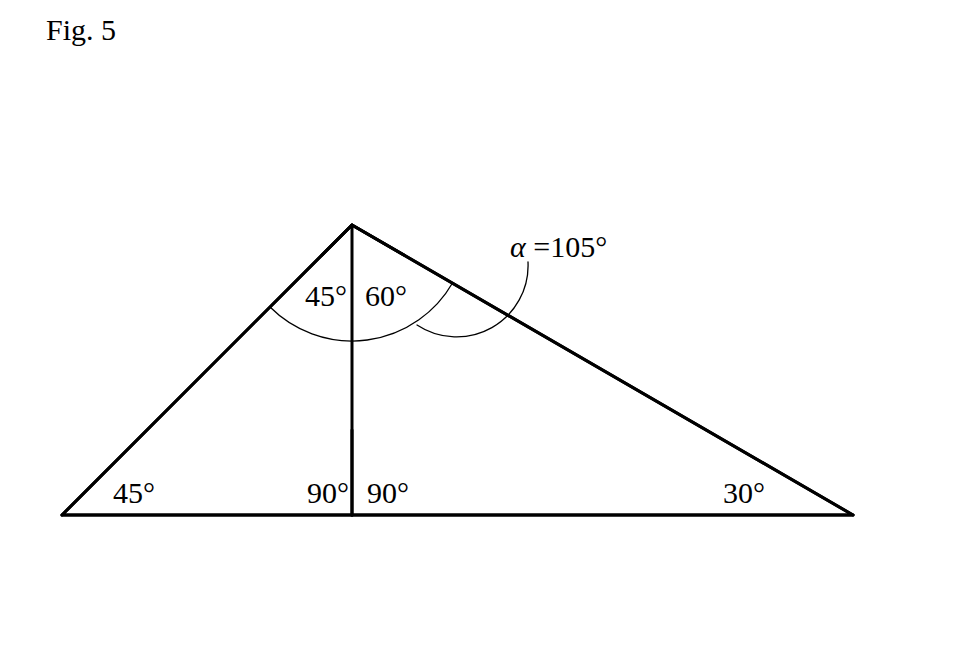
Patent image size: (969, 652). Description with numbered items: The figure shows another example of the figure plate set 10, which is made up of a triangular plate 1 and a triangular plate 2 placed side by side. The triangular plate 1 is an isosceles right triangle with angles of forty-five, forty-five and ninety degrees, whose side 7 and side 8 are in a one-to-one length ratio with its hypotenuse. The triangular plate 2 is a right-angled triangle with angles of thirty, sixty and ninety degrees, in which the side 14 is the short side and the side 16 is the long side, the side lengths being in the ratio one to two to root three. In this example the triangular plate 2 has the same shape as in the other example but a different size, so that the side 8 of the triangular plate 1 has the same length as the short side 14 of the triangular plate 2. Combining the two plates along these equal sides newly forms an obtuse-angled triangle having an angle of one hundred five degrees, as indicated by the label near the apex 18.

The figure plate set 10 is at (465, 220).
The triangular plate 1 is at (138, 400).
The triangular plate 2 is at (608, 338).
The side 7 is at (162, 516).
The side 8 is at (352, 442).
The side 14 is at (352, 413).
The side 16 is at (602, 515).
The apex 18 is at (353, 223).